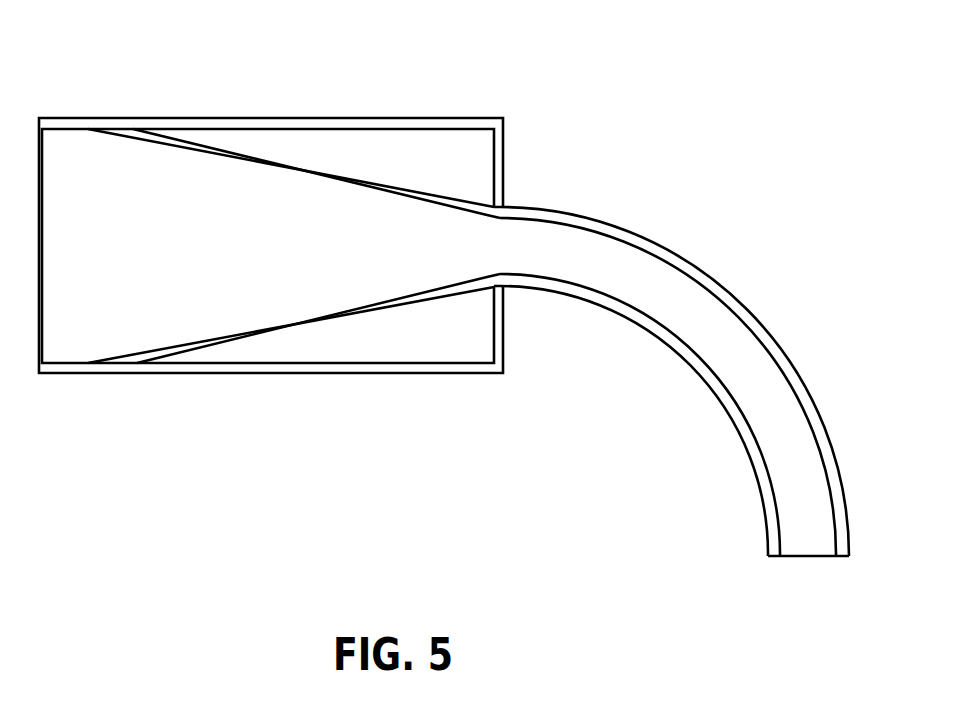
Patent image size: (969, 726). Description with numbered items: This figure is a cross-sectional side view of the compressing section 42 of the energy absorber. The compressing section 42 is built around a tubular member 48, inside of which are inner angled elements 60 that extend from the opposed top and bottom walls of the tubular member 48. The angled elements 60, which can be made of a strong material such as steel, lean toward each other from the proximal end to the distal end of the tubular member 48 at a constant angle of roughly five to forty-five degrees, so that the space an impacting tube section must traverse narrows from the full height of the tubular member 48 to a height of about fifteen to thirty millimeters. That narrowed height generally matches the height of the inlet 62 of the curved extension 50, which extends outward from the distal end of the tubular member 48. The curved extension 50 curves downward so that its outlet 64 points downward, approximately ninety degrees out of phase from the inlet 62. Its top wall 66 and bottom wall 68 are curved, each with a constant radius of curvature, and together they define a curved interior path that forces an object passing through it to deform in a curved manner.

The compressing section 42 is at (645, 53).
The tubular member 48 is at (322, 126).
The curved extension 50 is at (708, 237).
The inner angled elements 60 is at (356, 184).
The inlet 62 is at (510, 259).
The outlet 64 is at (808, 558).
The top wall 66 is at (774, 344).
The bottom wall 68 is at (707, 376).